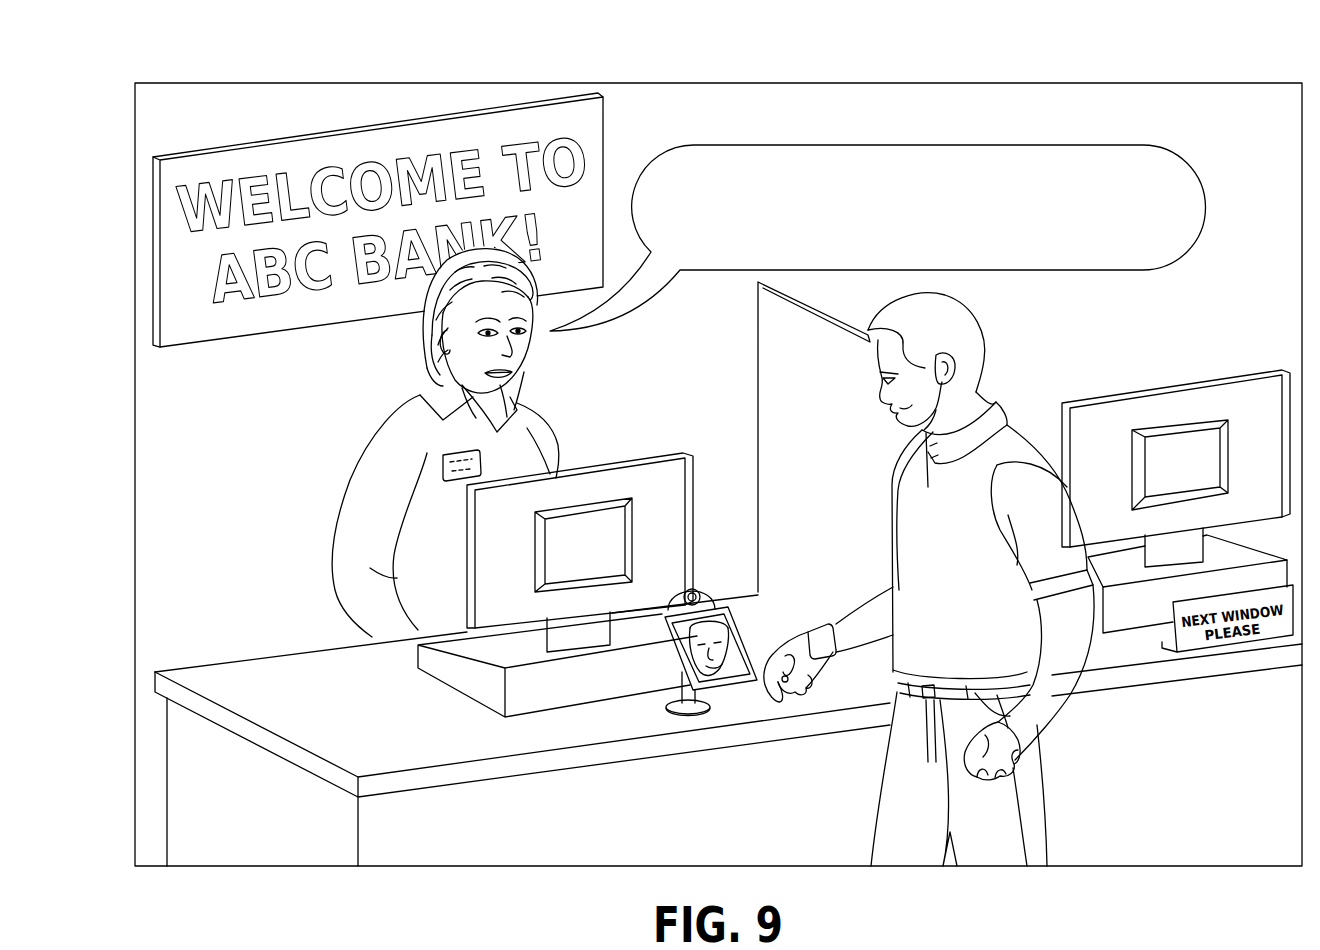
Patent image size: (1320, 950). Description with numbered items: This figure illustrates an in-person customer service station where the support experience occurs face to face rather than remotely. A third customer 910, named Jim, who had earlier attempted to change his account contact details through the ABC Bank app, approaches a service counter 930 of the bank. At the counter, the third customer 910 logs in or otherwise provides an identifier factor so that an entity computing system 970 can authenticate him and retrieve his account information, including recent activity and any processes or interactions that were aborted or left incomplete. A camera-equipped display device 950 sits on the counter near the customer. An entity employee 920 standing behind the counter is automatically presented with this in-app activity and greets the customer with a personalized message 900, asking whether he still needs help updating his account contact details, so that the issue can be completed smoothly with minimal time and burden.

The personalized message 900 is at (787, 120).
The third customer 910 is at (995, 328).
The entity employee 920 is at (552, 367).
The service counter 930 is at (290, 601).
The camera-equipped display device 950 is at (710, 576).
The entity computing system 970 is at (432, 694).